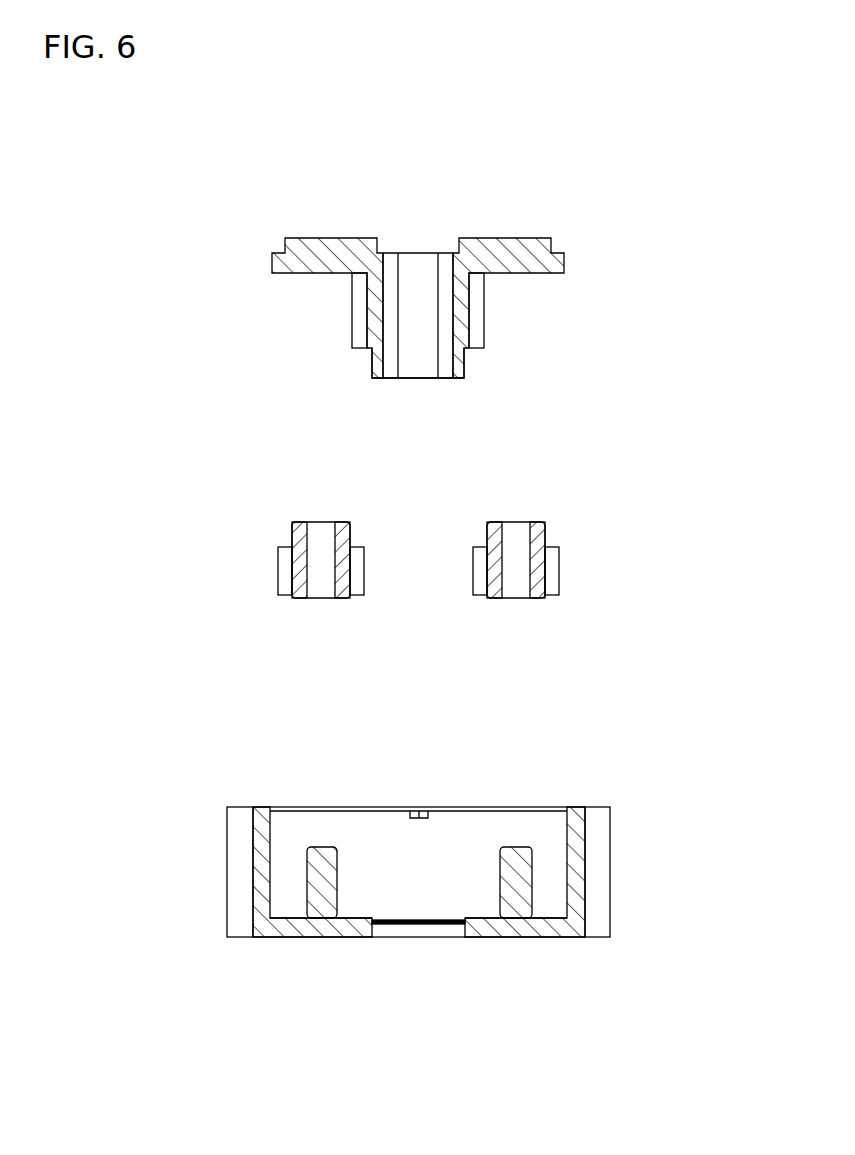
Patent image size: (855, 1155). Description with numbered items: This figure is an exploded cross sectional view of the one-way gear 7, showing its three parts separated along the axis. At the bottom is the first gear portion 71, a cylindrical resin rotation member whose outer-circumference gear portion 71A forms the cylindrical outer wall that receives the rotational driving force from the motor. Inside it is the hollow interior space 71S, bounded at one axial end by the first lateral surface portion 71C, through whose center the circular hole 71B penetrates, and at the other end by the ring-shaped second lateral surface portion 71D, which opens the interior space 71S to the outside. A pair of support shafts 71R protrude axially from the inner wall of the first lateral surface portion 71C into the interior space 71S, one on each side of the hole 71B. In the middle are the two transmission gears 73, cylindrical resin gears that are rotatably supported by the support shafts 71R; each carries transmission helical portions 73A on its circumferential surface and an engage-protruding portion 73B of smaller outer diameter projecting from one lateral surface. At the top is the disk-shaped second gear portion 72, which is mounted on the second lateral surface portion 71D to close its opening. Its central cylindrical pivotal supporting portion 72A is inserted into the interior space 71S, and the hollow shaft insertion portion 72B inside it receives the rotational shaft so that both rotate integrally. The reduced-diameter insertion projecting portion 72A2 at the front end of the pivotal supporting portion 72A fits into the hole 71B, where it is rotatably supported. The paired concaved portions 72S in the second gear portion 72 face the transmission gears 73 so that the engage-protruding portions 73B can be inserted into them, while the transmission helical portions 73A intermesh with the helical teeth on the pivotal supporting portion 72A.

The one-way gear 7 is at (745, 403).
The first gear portion 71 is at (638, 859).
The outer-circumference gear portion 71A is at (227, 870).
The hole 71B is at (446, 928).
The first lateral surface portion 71C is at (295, 938).
The second lateral surface portion 71D is at (247, 806).
The support shafts 71R is at (337, 872).
The interior space 71S is at (371, 827).
The second gear portion 72 is at (586, 293).
The pivotal supporting portion 72A is at (361, 313).
The insertion projecting portion 72A2 is at (372, 361).
The shaft insertion portion 72B is at (420, 363).
The concaved portions 72S is at (314, 274).
The transmission gears 73 is at (583, 557).
The transmission helical portions 73A is at (473, 580).
The engage-protruding portions 73B is at (490, 523).